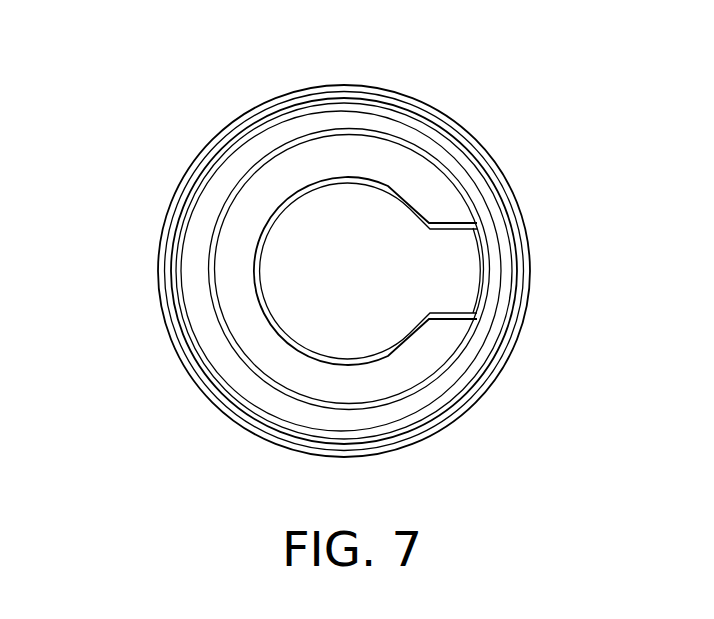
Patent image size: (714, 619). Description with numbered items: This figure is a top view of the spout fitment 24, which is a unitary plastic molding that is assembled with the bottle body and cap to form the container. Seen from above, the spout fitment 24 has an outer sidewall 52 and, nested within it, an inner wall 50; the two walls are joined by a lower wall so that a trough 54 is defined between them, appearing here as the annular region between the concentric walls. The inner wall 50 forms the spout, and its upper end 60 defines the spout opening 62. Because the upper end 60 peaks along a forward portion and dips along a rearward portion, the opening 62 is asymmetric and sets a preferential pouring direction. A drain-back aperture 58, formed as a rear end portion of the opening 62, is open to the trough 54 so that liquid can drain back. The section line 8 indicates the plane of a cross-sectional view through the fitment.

The spout fitment 24 is at (137, 131).
The inner wall 50 is at (392, 164).
The outer sidewall 52 is at (518, 158).
The trough 54 is at (202, 226).
The drain-back aperture 58 is at (478, 263).
The upper end 60 is at (358, 177).
The spout opening 62 is at (309, 194).
The section line 8- 8 is at (85, 233).